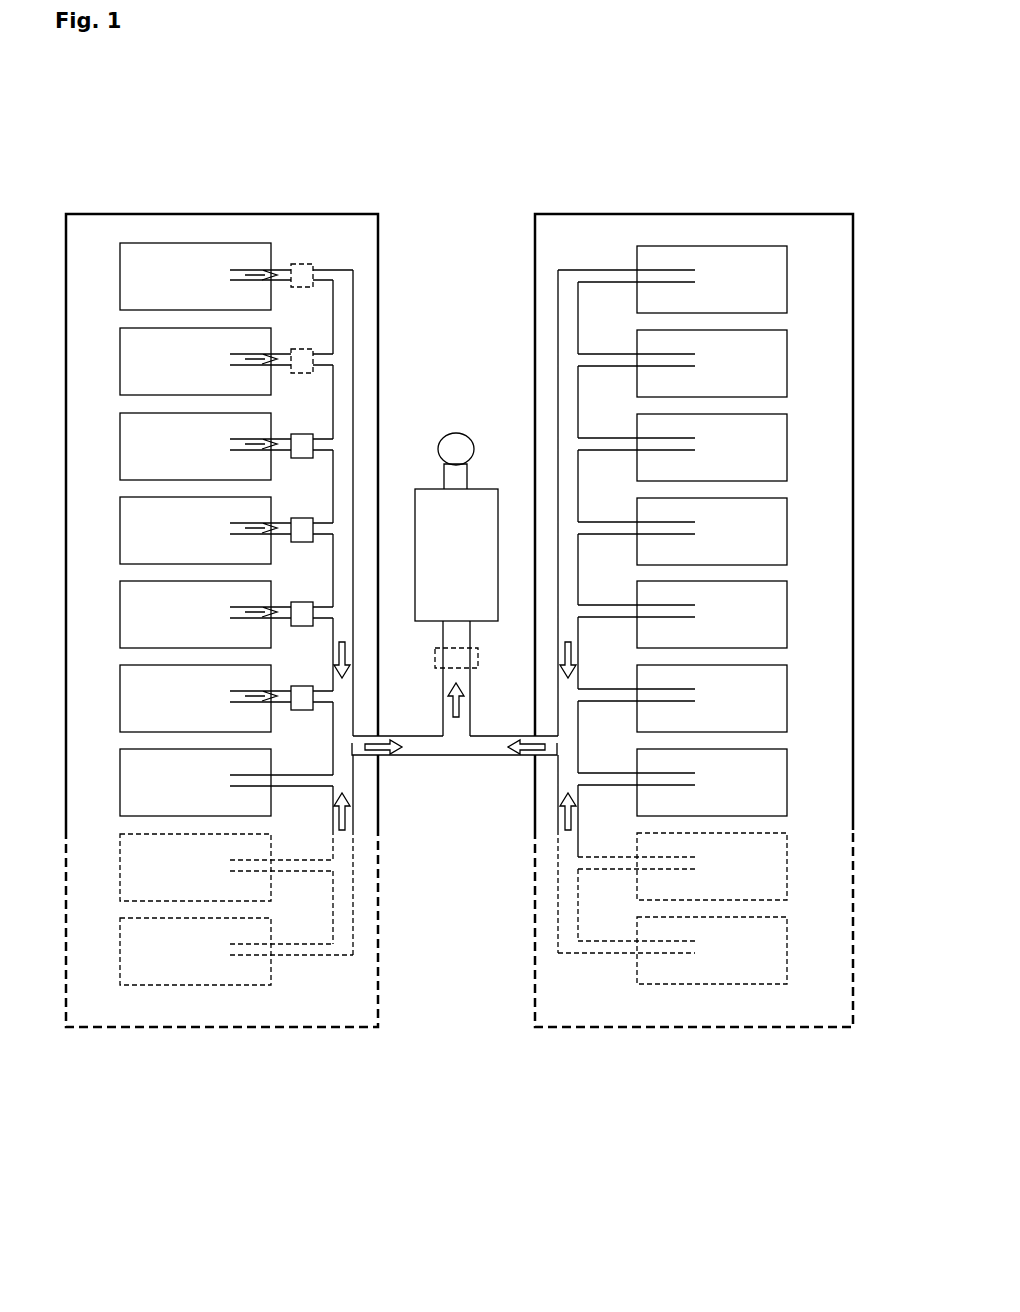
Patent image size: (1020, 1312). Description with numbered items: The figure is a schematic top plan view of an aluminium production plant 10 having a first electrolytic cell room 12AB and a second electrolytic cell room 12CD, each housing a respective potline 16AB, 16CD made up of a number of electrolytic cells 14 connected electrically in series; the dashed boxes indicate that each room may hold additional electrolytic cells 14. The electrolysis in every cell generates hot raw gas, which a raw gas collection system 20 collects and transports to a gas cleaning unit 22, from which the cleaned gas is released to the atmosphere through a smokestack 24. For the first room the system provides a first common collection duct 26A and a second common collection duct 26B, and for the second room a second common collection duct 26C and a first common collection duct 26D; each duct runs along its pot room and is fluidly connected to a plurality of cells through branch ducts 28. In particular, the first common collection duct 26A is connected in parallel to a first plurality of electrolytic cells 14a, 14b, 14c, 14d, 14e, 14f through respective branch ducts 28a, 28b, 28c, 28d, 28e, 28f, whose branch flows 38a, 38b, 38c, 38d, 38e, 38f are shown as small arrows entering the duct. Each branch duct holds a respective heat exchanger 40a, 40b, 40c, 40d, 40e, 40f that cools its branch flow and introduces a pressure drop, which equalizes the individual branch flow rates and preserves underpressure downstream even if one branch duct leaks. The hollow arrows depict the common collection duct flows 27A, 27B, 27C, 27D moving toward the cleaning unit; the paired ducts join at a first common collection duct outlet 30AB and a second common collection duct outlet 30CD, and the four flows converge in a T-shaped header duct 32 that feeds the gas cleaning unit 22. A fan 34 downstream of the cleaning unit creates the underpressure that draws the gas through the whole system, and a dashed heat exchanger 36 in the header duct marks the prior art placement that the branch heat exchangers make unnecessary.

The aluminium production plant 10 is at (796, 62).
The first electrolytic cell room 12AB is at (205, 213).
The second electrolytic cell room 12CD is at (740, 213).
The electrolytic cell 14 is at (120, 763).
The first smelting pot 14a is at (120, 690).
The electrolytic cell 14b is at (120, 615).
The electrolytic cell 14c is at (120, 532).
The electrolytic cell 14d is at (120, 462).
The electrolytic cell 14e is at (120, 340).
The electrolytic cell 14f is at (120, 262).
The potline 16AB is at (242, 1077).
The potline 16CD is at (706, 1062).
The raw gas collection system 20 is at (466, 1062).
The gas cleaning unit 22 is at (430, 622).
The smokestack 24 is at (441, 446).
The first common collection duct 26A is at (351, 307).
The second common collection duct 26B is at (352, 853).
The second common collection duct 26C is at (556, 838).
The first common collection duct 26D is at (559, 308).
The first common collection duct flow 27A is at (346, 662).
The second common collection duct flow 27B is at (347, 822).
The common collection duct flow 27C is at (572, 826).
The common collection duct flow 27D is at (572, 643).
The branch duct 28 is at (244, 775).
The branch duct 28a is at (244, 691).
The branch duct 28b is at (244, 607).
The branch duct 28c is at (244, 523).
The branch duct 28d is at (244, 439).
The branch duct 28e is at (244, 354).
The branch duct 28f is at (244, 270).
The first common collection duct outlet 30AB is at (355, 757).
The second common collection duct outlet 30CD is at (557, 757).
The T-shaped header duct 32 is at (470, 700).
The fan 34 is at (467, 477).
The heat exchanger 36 is at (478, 658).
The branch flow 38a is at (254, 703).
The branch flow 38b is at (254, 619).
The branch flow 38c is at (254, 535).
The branch flow 38d is at (254, 451).
The branch flow 38e is at (254, 366).
The branch flow 38f is at (254, 281).
The heat exchanger 40a is at (301, 686).
The heat exchanger 40b is at (301, 602).
The heat exchanger 40c is at (301, 518).
The heat exchanger 40d is at (301, 434).
The heat exchanger 40e is at (301, 349).
The heat exchanger 40f is at (301, 264).